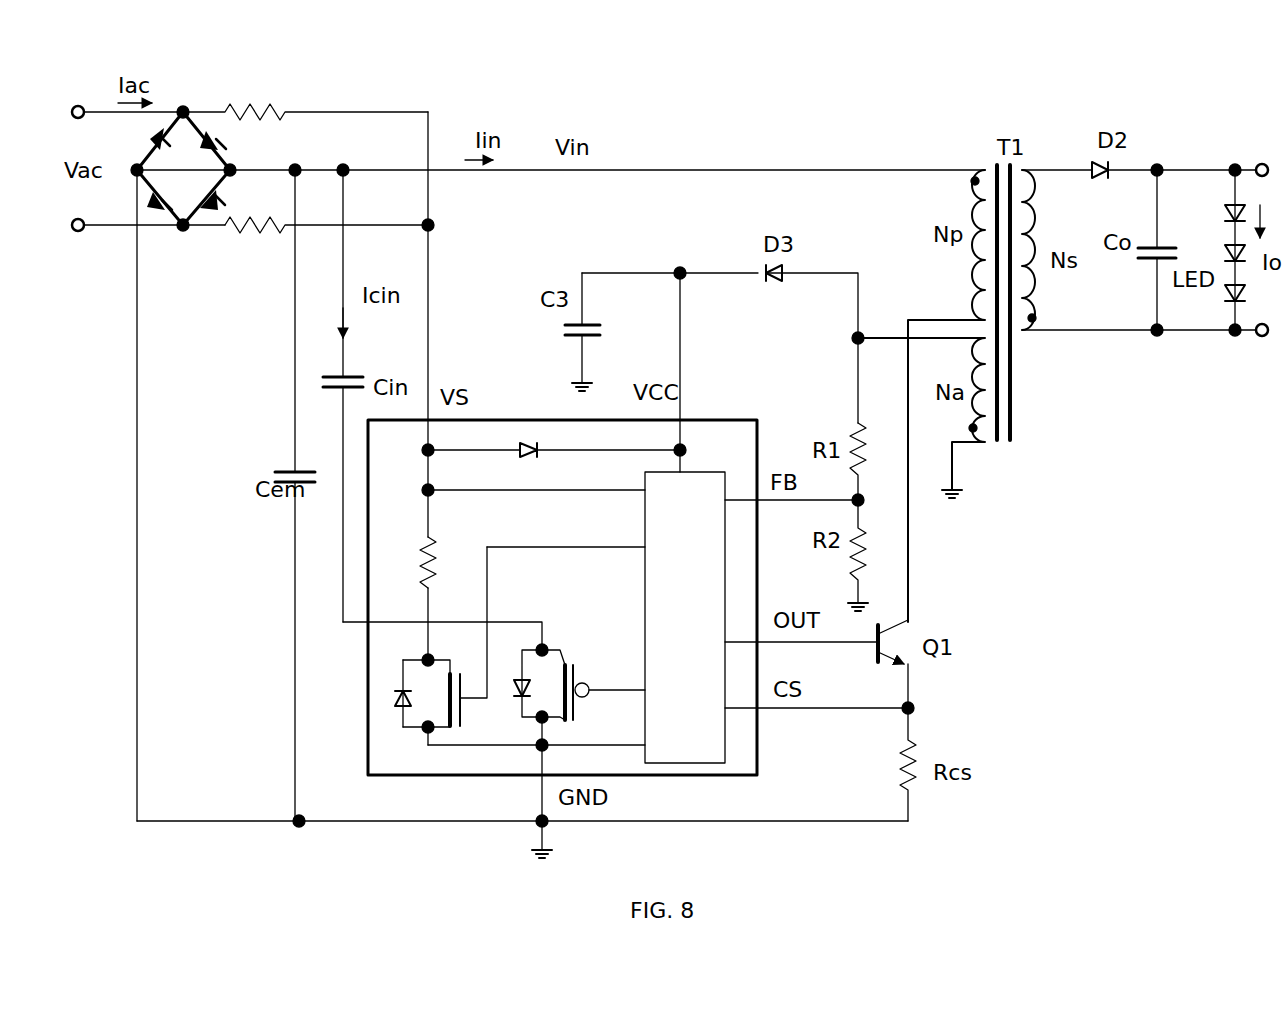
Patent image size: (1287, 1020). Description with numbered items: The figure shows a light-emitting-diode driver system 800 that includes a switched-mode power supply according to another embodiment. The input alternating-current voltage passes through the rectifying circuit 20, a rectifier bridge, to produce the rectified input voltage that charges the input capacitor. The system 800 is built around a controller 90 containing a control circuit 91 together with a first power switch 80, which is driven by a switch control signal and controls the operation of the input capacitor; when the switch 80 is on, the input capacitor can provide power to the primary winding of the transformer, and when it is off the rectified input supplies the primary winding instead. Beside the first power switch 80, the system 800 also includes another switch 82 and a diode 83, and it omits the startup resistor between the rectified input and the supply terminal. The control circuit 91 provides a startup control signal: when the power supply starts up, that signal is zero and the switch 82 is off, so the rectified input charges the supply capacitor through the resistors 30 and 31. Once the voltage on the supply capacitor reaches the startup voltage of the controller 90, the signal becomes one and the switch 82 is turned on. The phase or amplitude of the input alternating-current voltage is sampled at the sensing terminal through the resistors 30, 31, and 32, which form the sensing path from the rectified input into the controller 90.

The rectifying circuit 20 is at (197, 181).
The resistor 30 is at (258, 100).
The resistor 31 is at (250, 242).
The resistor 32 is at (420, 537).
The first power switch 80 is at (575, 663).
The switch 82 is at (402, 713).
The diode 83 is at (540, 458).
The controller 90 is at (540, 418).
The control circuit 91 is at (709, 613).
The LED driver system 800 is at (1196, 110).